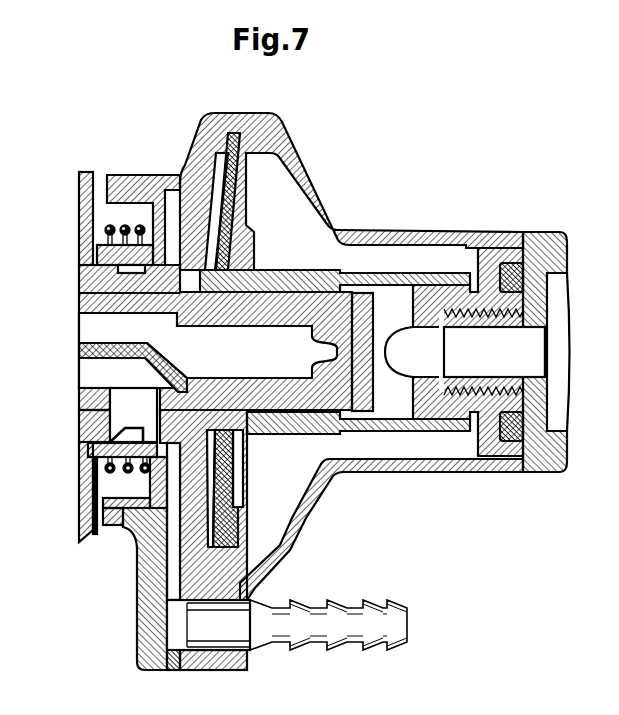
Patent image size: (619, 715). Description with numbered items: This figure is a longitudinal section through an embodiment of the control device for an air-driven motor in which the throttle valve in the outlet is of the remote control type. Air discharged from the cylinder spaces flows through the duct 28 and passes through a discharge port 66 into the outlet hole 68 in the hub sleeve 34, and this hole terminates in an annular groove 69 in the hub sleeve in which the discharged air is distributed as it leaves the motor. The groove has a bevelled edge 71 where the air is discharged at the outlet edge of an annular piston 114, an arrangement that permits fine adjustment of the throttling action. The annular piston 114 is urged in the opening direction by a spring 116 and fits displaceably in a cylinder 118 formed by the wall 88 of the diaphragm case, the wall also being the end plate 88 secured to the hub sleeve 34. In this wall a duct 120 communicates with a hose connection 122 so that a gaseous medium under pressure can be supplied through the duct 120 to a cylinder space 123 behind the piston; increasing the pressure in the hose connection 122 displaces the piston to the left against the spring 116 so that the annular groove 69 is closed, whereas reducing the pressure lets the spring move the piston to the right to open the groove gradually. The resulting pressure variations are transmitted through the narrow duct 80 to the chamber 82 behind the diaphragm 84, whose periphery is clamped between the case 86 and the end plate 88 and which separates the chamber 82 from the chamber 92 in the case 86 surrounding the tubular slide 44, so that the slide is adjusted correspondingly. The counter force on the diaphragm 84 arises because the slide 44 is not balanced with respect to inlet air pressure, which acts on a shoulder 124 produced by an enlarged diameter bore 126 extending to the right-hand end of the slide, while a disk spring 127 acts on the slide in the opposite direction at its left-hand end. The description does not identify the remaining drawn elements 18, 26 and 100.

The housing body 18 is at (82, 405).
The inlet passage 26 is at (208, 345).
The duct 28 is at (92, 376).
The hub sleeve 34 is at (83, 420).
The tubular slide 44 is at (283, 434).
The discharge port 66 is at (150, 398).
The outlet hole 68 is at (90, 443).
The annular groove 69 is at (127, 476).
The bevelled edge 71 is at (79, 265).
The narrow duct 80 is at (157, 419).
The chamber 82 is at (208, 222).
The diaphragm 84 is at (237, 496).
The case 86 is at (302, 523).
The end plate 88 is at (153, 607).
The chamber 92 is at (351, 191).
The sleeve 100 is at (250, 280).
The annular piston 114 is at (91, 480).
The spring 116 is at (78, 520).
The cylinder 118 is at (123, 527).
The duct 120 is at (188, 604).
The hose connection 122 is at (283, 651).
The cylinder space 123 is at (137, 573).
The shoulder 124 is at (350, 290).
The enlarged diameter bore 126 is at (413, 286).
The disk spring 127 is at (184, 170).